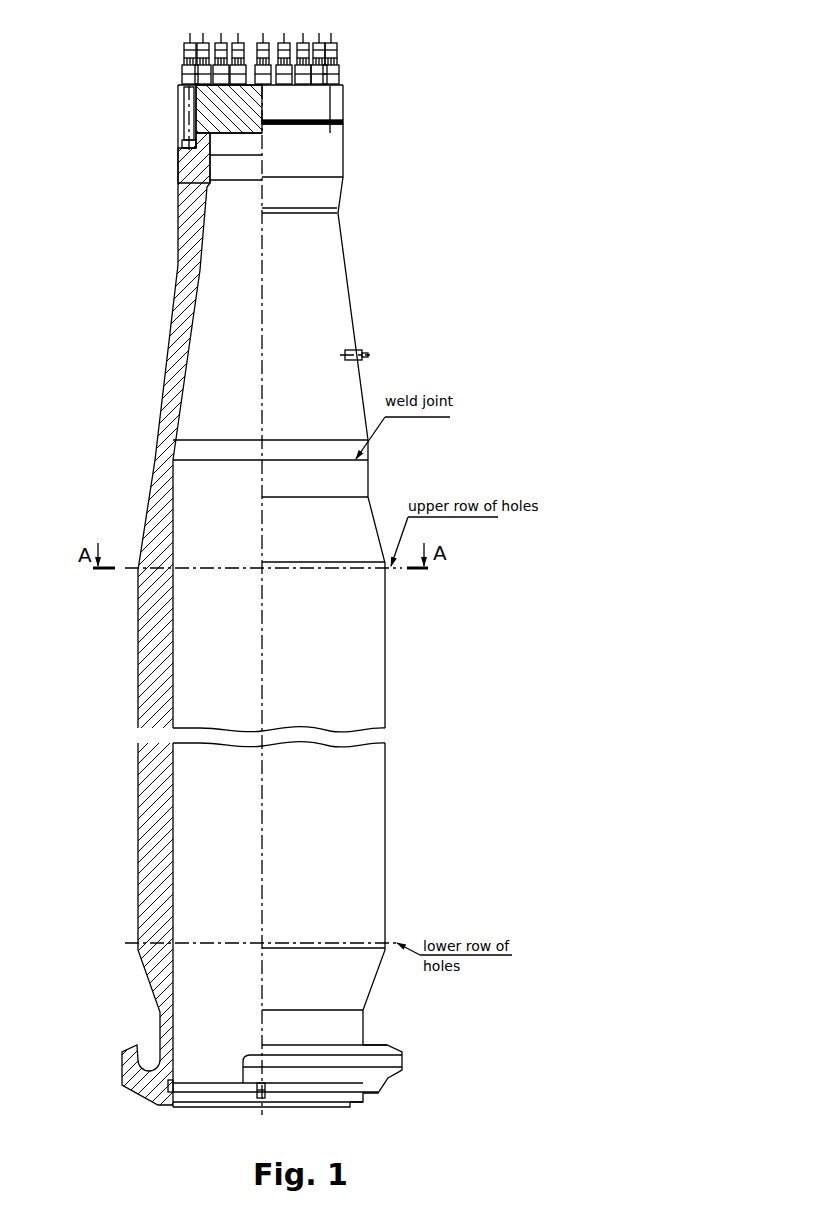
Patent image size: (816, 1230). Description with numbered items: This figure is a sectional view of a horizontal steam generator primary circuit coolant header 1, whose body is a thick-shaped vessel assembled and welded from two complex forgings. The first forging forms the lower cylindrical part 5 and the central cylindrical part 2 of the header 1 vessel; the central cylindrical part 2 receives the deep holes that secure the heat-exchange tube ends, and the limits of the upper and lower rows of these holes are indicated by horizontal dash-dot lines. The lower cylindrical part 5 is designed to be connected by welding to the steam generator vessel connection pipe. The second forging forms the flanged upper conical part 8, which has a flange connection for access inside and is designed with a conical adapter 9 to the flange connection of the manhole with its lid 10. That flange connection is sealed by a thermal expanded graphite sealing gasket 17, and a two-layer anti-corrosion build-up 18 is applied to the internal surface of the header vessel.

The primary circuit coolant header 1 is at (323, 326).
The central cylindrical part 2 is at (153, 849).
The lower cylindrical part 5 is at (135, 1072).
The upper part 8 is at (320, 160).
The conical adapter 9 is at (175, 337).
The lid 10 is at (305, 103).
The thermal expanded graphite sealing gasket 17 is at (183, 123).
The two-layer anti-corrosion build-up 18 is at (172, 625).